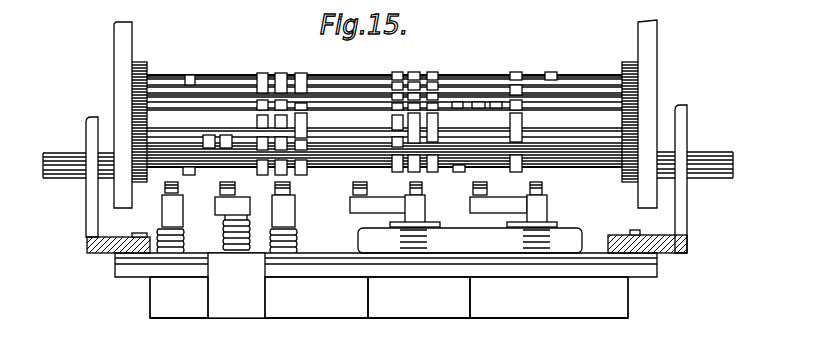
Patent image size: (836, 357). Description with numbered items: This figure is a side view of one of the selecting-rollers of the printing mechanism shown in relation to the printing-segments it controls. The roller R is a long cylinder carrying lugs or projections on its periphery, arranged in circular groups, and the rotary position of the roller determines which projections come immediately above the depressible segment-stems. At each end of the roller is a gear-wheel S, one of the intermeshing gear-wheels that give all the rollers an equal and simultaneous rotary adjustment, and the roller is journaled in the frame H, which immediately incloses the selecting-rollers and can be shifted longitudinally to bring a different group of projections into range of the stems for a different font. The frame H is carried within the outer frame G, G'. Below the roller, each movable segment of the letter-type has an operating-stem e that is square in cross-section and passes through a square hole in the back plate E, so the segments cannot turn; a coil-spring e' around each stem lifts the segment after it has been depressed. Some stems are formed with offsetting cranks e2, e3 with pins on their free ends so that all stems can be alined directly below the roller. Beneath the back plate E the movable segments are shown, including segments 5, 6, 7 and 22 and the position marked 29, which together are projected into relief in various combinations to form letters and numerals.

The selecting-roller R is at (384, 113).
The gear-wheel S is at (147, 67).
The frame H is at (120, 47).
The frame G is at (95, 185).
The frame G' is at (665, 179).
The back plate E is at (130, 272).
The operating-stem e is at (241, 204).
The coil-spring e' is at (235, 239).
The offsetting crank e2 is at (370, 203).
The offsetting crank e3 is at (233, 200).
The compartment 29 is at (179, 297).
The movable segment 22 is at (236, 285).
The movable segment 7 is at (316, 297).
The movable segment 6 is at (419, 297).
The movable segment 5 is at (549, 297).